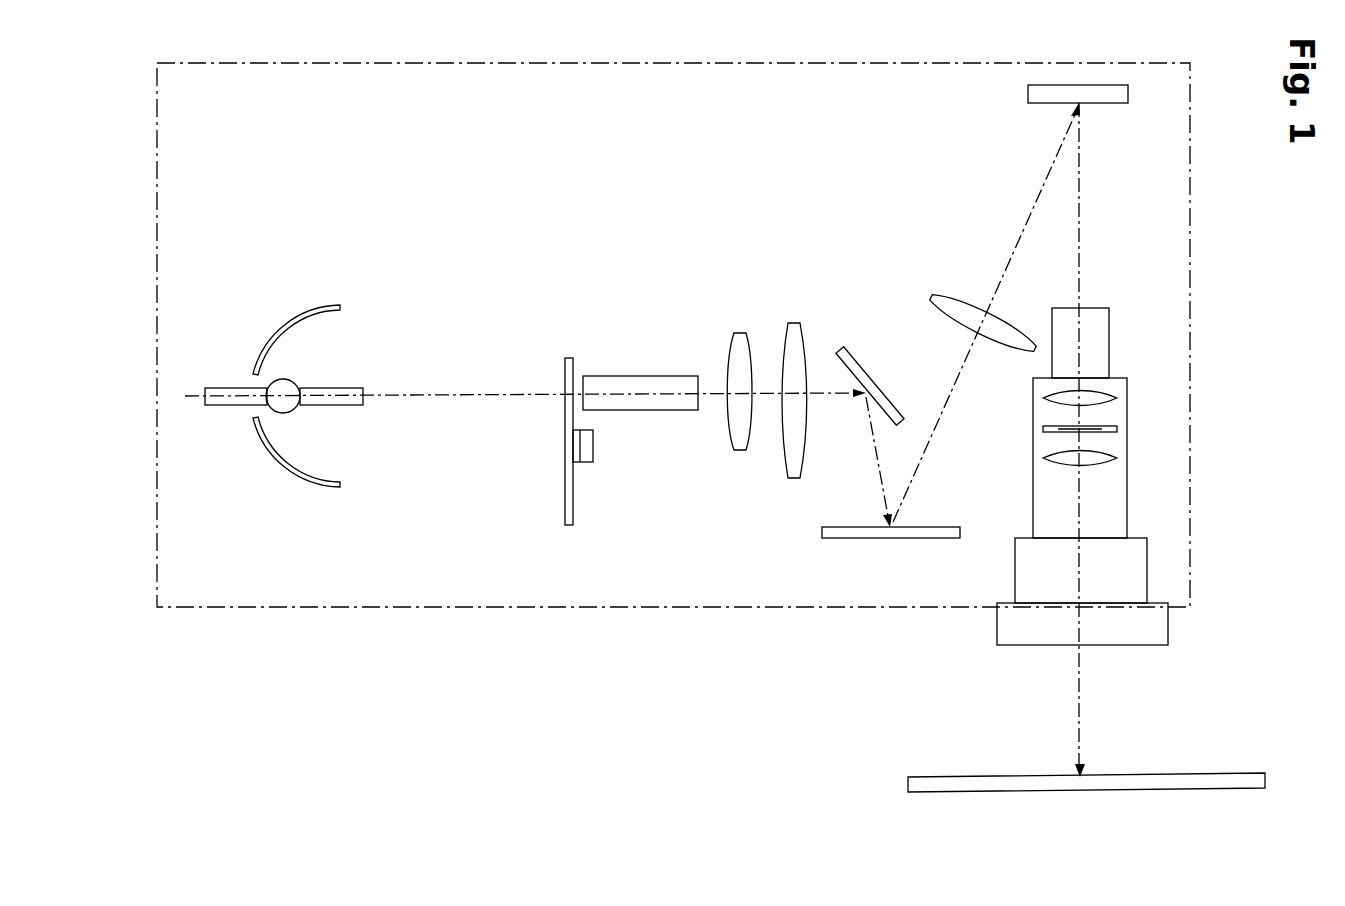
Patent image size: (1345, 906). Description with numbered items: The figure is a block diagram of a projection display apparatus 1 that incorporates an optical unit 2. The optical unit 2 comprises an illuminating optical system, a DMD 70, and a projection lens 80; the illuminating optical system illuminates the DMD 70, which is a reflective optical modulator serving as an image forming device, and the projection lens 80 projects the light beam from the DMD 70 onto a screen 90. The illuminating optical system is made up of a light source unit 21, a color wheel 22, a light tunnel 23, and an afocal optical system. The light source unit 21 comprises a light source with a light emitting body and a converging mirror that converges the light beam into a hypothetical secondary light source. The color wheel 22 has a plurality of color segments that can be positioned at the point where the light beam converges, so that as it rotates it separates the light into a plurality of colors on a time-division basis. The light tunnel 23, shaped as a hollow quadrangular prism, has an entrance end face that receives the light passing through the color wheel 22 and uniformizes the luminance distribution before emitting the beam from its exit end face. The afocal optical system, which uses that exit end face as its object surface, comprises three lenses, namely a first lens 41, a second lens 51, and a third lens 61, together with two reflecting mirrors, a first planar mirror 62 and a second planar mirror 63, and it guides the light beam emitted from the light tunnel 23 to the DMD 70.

The projection display apparatus 1 is at (500, 609).
The optical unit 2 is at (362, 151).
The light source unit 21 is at (310, 280).
The color wheel 22 is at (565, 470).
The light tunnel 23 is at (603, 376).
The first lens 41 is at (740, 452).
The second lens 51 is at (792, 480).
The third lens 61 is at (965, 300).
The first planar mirror 62 is at (853, 352).
The second planar mirror 63 is at (845, 538).
The DMD 70 is at (1128, 94).
The projection lens 80 is at (1127, 510).
The screen 90 is at (928, 777).